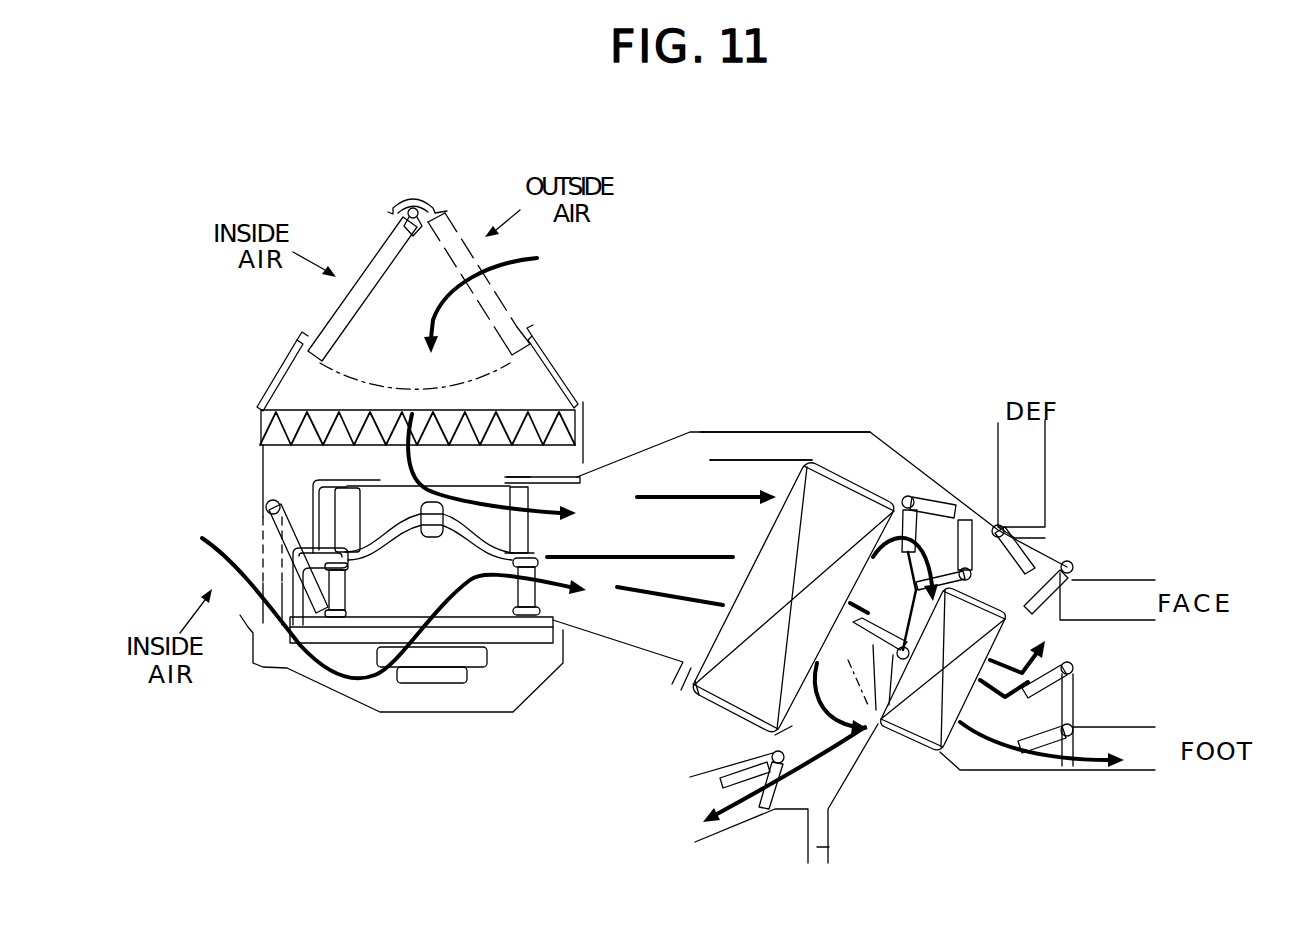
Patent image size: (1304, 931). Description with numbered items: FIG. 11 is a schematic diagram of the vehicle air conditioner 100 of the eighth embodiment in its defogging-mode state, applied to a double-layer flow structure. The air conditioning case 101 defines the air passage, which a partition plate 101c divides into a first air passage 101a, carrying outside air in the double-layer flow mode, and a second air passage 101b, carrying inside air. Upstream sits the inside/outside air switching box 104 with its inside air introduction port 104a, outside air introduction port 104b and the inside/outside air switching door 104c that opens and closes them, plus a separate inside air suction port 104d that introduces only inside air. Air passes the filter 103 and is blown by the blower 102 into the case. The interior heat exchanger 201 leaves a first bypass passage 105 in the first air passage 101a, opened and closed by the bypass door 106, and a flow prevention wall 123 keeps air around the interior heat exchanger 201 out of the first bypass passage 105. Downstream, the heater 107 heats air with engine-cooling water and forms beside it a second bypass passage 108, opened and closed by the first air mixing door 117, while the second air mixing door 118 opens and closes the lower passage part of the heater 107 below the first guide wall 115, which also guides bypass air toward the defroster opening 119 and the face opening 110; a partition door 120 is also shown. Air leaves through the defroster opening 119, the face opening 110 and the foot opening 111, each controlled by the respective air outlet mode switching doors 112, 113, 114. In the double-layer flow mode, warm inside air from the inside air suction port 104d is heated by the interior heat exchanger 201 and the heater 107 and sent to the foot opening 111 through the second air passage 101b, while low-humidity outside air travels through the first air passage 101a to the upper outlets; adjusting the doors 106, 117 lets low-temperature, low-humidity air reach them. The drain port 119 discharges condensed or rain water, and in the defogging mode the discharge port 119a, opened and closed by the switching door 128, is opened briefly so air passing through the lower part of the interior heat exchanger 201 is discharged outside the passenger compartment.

The vehicle air conditioner 100 is at (834, 343).
The air conditioning case 101 is at (645, 450).
The first air passage 101a is at (687, 443).
The second air passage 101b is at (643, 627).
The partition plate 101c is at (607, 558).
The blower 102 is at (437, 663).
The filter 103 is at (582, 406).
The inside/outside air switching box 104 is at (558, 377).
The inside air introduction port 104a is at (357, 257).
The outside air introduction port 104b is at (507, 293).
The inside/outside air switching door 104c is at (375, 232).
The inside air suction port 104d is at (257, 550).
The first bypass passage 105 is at (872, 445).
The bypass door 106 is at (925, 500).
The heater 107 is at (923, 723).
The second bypass passage 108 is at (987, 570).
The face opening 110 is at (1120, 593).
The foot opening 111 is at (1123, 742).
The air outlet mode switching door 112 is at (1010, 560).
The air outlet mode switching door 113 is at (1050, 603).
The air outlet mode switching door 114 is at (1067, 703).
The first guide wall 115 is at (997, 687).
The first air mixing door 117 is at (967, 523).
The second air mixing door 118 is at (880, 735).
The drain port 119 is at (1023, 450).
The air discharge port 119a is at (727, 820).
The partition door 120 is at (1050, 660).
The flow prevention wall 123 is at (752, 456).
The switching door 128 is at (760, 808).
The interior heat exchanger 201 is at (727, 693).